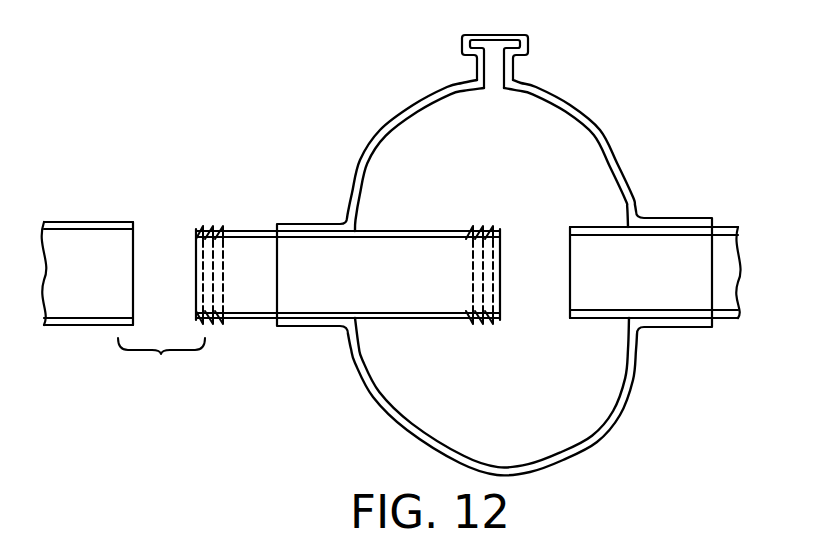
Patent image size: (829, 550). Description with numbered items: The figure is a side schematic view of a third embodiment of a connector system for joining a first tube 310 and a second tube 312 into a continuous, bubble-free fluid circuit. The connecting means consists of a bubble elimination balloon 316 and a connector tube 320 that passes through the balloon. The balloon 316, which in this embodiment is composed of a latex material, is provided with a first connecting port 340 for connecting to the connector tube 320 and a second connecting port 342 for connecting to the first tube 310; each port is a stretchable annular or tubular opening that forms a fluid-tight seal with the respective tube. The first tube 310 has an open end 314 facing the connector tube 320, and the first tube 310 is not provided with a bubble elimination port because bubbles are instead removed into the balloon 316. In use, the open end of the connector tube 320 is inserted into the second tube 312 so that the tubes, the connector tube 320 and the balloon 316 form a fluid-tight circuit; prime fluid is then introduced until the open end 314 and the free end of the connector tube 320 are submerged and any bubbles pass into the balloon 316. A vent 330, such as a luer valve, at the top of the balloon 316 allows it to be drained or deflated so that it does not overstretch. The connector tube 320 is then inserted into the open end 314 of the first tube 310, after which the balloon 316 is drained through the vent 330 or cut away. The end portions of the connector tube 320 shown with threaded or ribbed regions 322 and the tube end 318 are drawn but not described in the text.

The first tube 310 is at (75, 222).
The second tube 312 is at (736, 226).
The open end of first tube 314 is at (127, 248).
The bubble elimination balloon 316 is at (586, 91).
The tube end 318 is at (572, 244).
The connector tube 320 is at (272, 320).
The threaded end portions 322 is at (210, 325).
The vent 330 is at (493, 56).
The first connecting port 340 is at (310, 224).
The second connecting port 342 is at (688, 218).